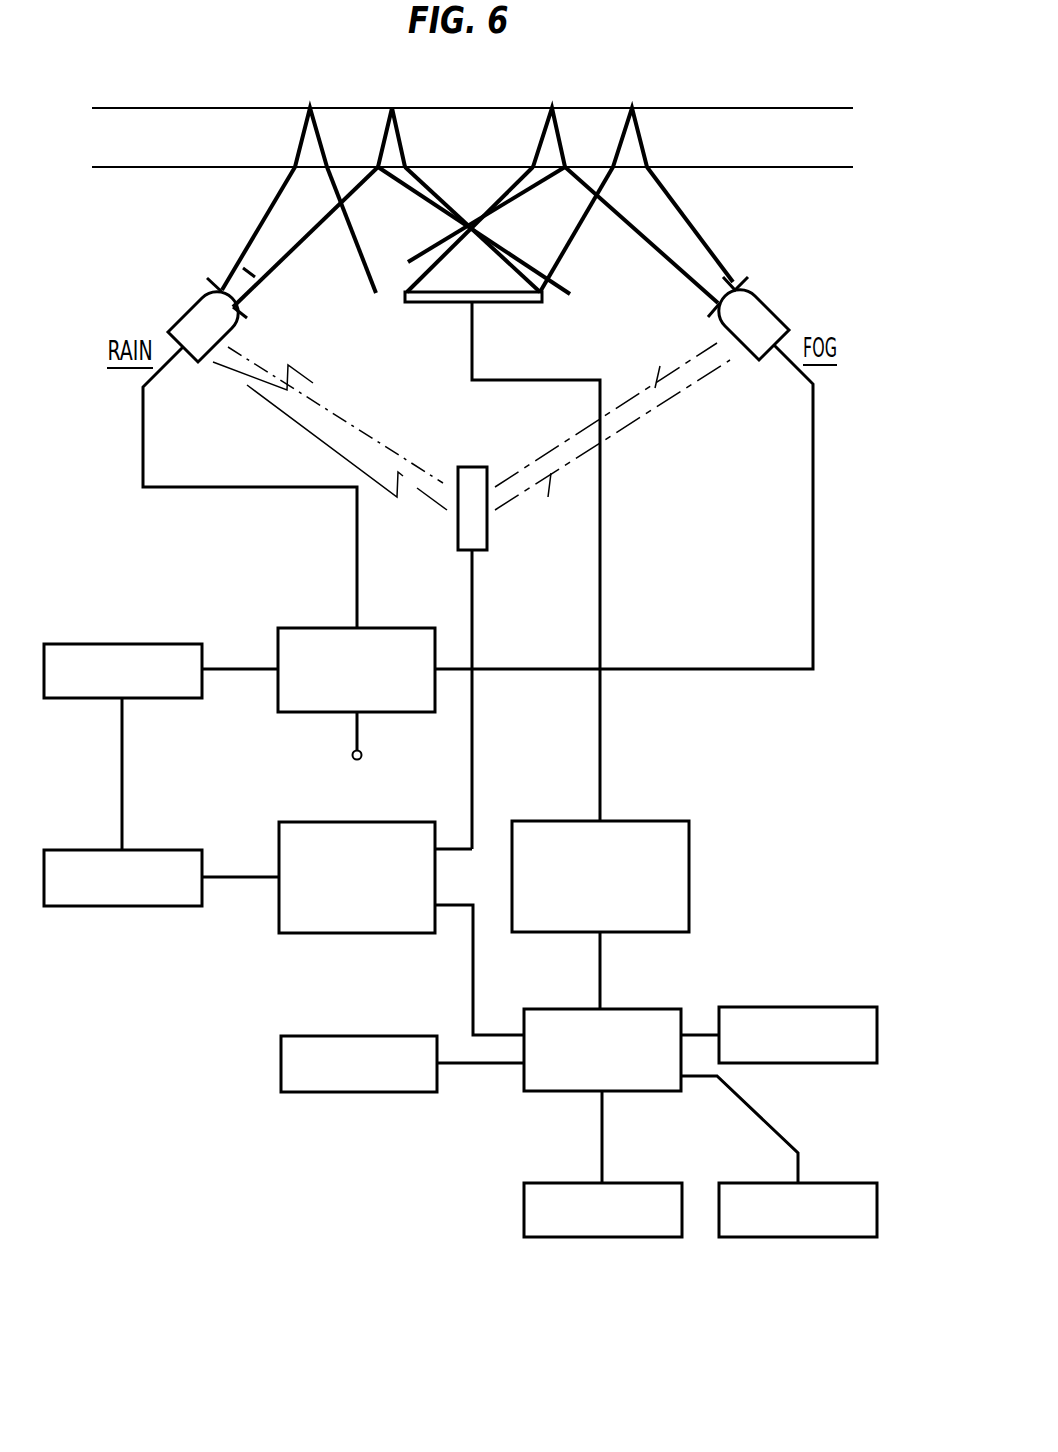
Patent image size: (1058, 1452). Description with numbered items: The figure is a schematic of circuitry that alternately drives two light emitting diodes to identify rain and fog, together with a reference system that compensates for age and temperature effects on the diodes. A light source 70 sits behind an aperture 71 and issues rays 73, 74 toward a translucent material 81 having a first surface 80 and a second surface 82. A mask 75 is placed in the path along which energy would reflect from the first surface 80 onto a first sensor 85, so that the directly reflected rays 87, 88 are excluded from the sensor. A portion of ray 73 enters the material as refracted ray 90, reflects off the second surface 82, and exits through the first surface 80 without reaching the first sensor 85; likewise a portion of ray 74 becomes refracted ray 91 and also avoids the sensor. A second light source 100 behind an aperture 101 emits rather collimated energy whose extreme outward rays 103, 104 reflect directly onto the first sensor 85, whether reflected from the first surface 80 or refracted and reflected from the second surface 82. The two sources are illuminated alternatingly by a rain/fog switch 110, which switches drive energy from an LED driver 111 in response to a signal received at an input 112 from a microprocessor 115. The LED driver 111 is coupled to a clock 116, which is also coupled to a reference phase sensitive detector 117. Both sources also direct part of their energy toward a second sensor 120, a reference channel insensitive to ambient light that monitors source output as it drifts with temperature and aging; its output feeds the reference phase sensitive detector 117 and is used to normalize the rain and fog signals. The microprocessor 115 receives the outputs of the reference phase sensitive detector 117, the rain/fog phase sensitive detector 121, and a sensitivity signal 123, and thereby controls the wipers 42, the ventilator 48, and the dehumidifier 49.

The wipers 42 is at (800, 1007).
The ventilator 48 is at (793, 1240).
The dehumidifier 49 is at (603, 1240).
The light source 70 is at (198, 320).
The aperture 71 is at (224, 283).
The ray 73 is at (262, 217).
The ray 74 is at (288, 260).
The mask 75 is at (250, 273).
The first surface 80 is at (165, 170).
The translucent material 81 is at (472, 138).
The second surface 82 is at (165, 107).
The first sensor 85 is at (408, 303).
The reflecting ray 87 is at (363, 280).
The reflecting ray 88 is at (507, 257).
The refracted ray 90 is at (307, 118).
The refracted ray 91 is at (383, 118).
The second light source 100 is at (760, 313).
The aperture 101 is at (727, 277).
The ray 103 is at (677, 270).
The ray 104 is at (680, 197).
The rain/fog switch 110 is at (323, 628).
The LED driver 111 is at (120, 642).
The input 112 is at (358, 725).
The microprocessor 115 is at (553, 1093).
The clock 116 is at (122, 908).
The reference phase sensitive detector 117 is at (353, 933).
The second sensor 120 is at (467, 463).
The rain/fog phase sensitive detector 121 is at (642, 820).
The sensitivity signal 123 is at (362, 1095).